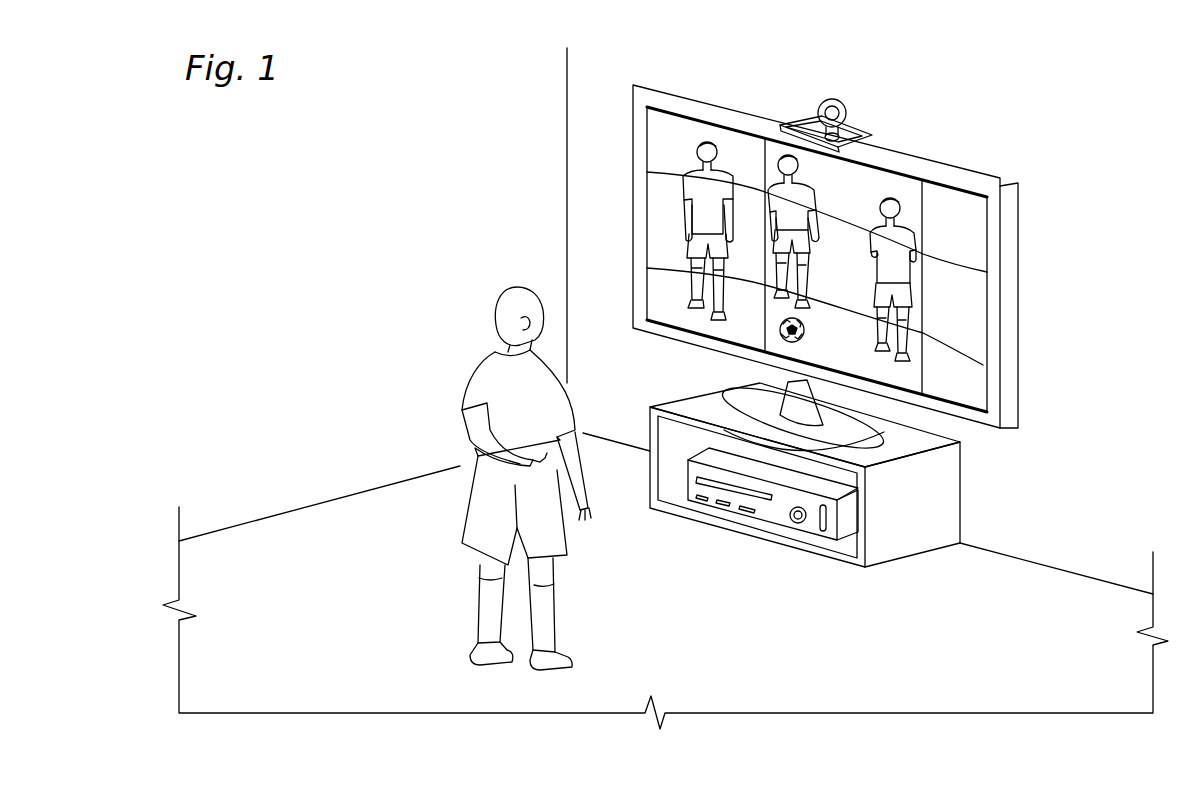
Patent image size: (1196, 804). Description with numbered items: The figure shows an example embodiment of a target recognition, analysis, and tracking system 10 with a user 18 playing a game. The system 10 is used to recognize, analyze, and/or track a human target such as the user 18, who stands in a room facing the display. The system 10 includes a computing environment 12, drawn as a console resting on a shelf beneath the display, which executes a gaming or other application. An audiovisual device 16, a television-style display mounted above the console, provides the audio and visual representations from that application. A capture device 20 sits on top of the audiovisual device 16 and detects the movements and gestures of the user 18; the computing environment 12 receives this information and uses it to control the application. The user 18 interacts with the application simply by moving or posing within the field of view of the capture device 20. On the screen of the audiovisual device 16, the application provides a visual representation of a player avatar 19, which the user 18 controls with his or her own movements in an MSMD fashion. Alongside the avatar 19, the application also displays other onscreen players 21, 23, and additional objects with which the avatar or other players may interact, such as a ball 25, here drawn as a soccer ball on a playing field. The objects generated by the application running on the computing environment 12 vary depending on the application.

The target recognition, analysis, and tracking system 10 is at (903, 69).
The computing environment 12 is at (778, 520).
The audiovisual device 16 is at (1022, 257).
The user 18 is at (485, 355).
The player avatar 19 is at (801, 188).
The capture device 20 is at (845, 118).
The onscreen player 21 is at (719, 182).
The onscreen player 23 is at (904, 233).
The ball 25 is at (783, 318).